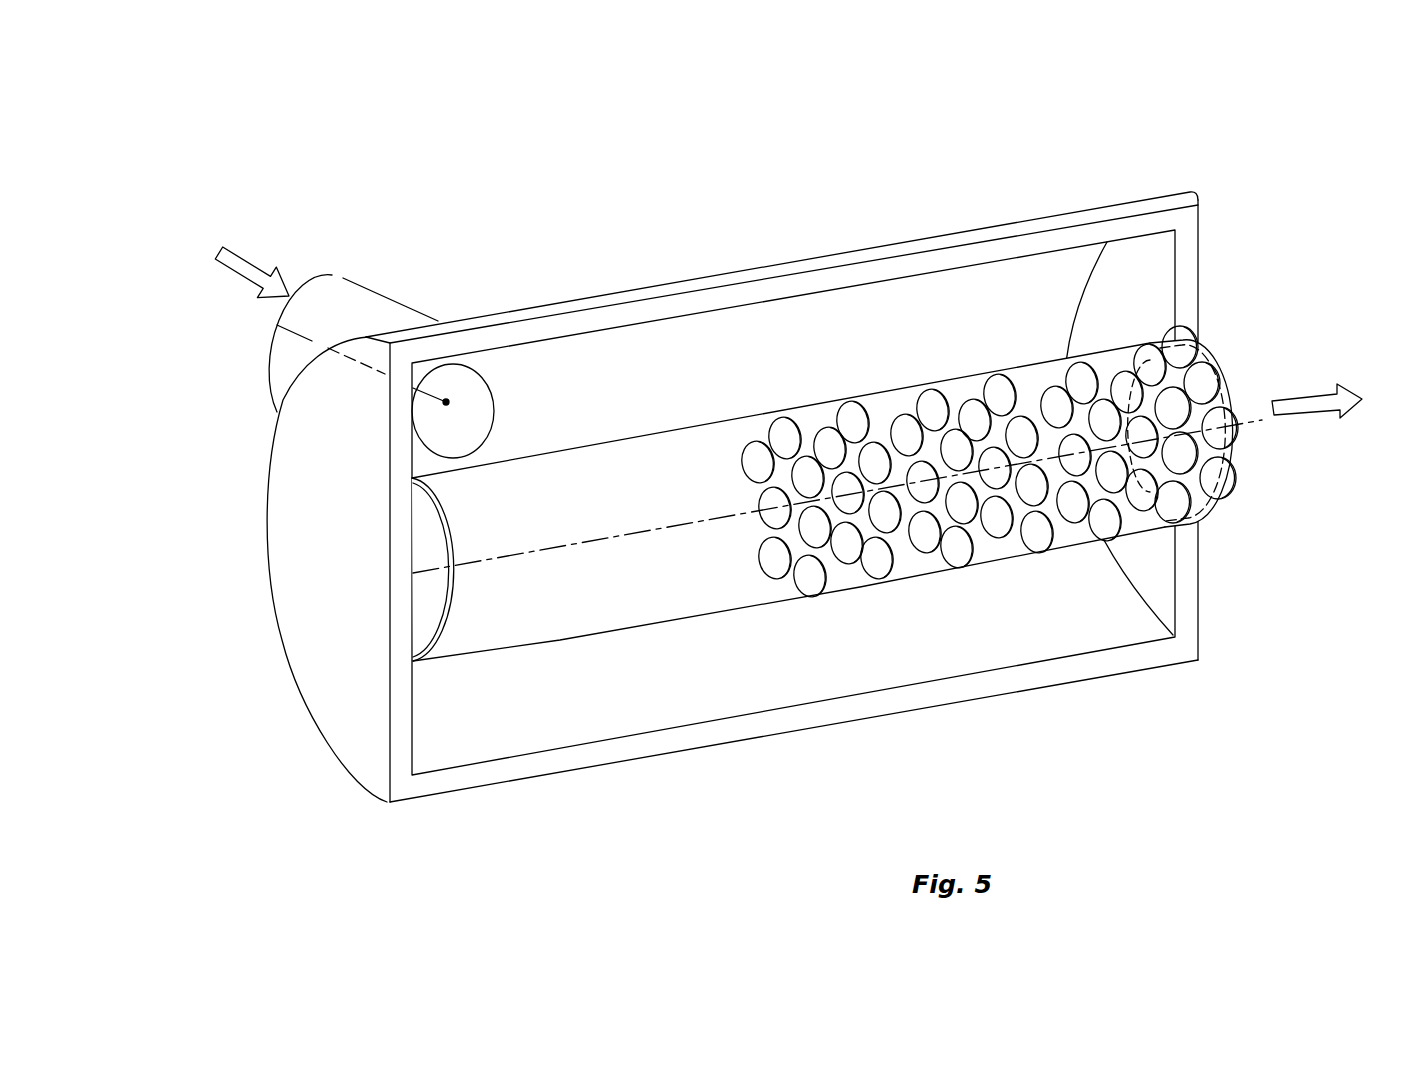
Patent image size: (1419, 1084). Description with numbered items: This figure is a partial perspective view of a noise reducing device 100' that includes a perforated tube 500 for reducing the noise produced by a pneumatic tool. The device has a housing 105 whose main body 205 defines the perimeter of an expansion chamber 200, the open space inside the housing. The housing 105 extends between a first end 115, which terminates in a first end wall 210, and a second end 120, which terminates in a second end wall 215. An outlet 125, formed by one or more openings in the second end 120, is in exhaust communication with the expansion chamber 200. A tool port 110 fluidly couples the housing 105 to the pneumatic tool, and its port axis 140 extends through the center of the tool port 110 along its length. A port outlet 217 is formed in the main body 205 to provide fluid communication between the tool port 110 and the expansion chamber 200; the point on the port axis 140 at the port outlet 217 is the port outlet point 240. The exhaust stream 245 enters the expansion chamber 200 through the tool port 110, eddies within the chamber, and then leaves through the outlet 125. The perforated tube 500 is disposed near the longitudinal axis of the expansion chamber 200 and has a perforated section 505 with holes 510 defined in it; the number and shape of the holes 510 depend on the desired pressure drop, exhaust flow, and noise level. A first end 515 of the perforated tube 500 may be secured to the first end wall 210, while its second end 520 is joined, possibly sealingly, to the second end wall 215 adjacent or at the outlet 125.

The noise reducing device 100' is at (791, 494).
The housing 105 is at (840, 220).
The tool port 110 is at (377, 296).
The first end 115 is at (396, 822).
The second end 120 is at (1195, 672).
The outlet 125 is at (1222, 525).
The port axis 140 is at (370, 335).
The expansion chamber 200 is at (627, 697).
The main body 205 is at (695, 302).
The first end wall 210 is at (352, 569).
The second end wall 215 is at (1152, 320).
The port outlet 217 is at (453, 386).
The port outlet point 240 is at (436, 411).
The exhaust stream 245 is at (250, 263).
The perforated tube 500 is at (688, 632).
The perforated section 505 is at (813, 612).
The holes 510 is at (876, 565).
The first end 515 is at (433, 673).
The second end 520 is at (1212, 335).